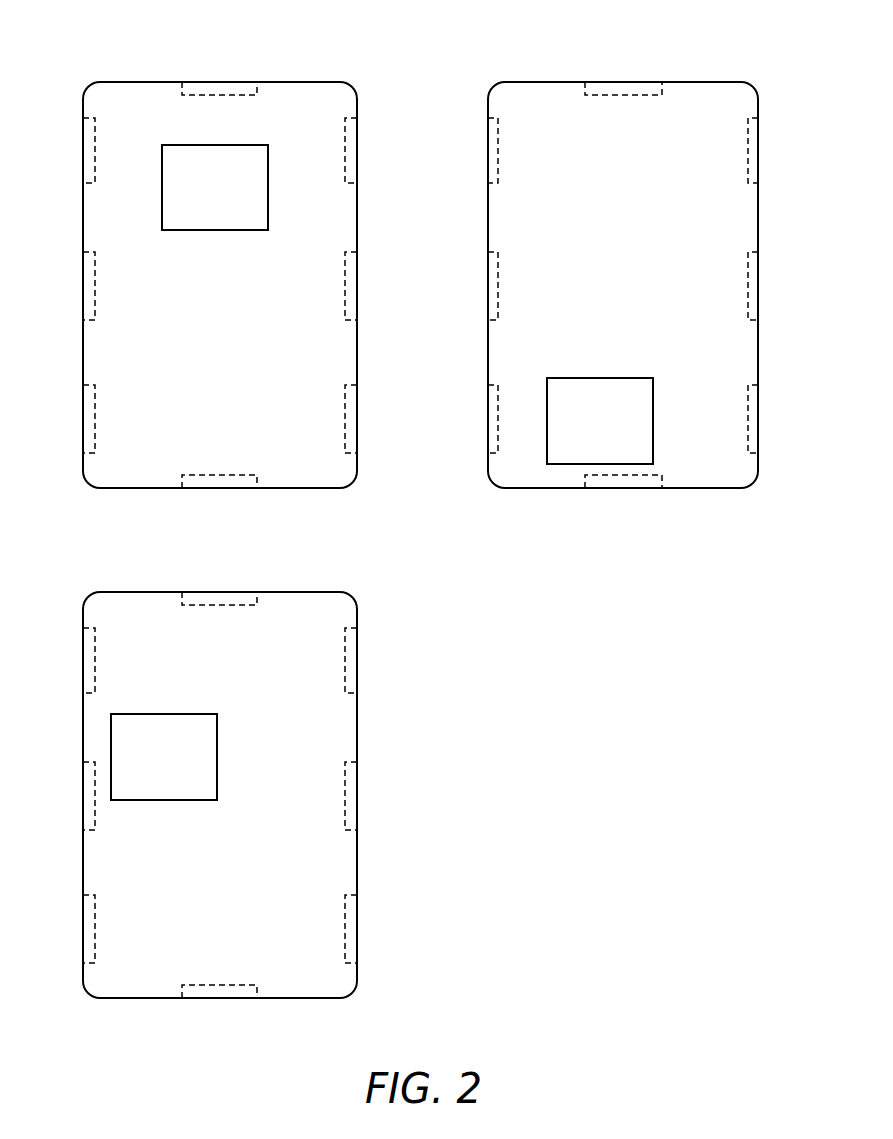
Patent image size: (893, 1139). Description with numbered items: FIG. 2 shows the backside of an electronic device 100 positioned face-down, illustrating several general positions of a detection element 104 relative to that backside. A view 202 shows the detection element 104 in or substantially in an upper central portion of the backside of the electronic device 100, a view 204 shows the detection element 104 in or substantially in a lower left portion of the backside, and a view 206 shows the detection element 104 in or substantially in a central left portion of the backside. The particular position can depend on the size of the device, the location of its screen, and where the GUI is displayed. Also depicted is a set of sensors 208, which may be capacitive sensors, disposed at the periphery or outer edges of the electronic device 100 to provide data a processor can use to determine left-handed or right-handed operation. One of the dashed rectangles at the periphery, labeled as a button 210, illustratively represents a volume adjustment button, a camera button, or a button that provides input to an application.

The electronic device 100 is at (425, 505).
The detection element 104 is at (388, 460).
The view 202 is at (96, 55).
The view 204 is at (503, 58).
The view 206 is at (96, 565).
The set of sensors 208 is at (448, 518).
The button 210 is at (488, 146).